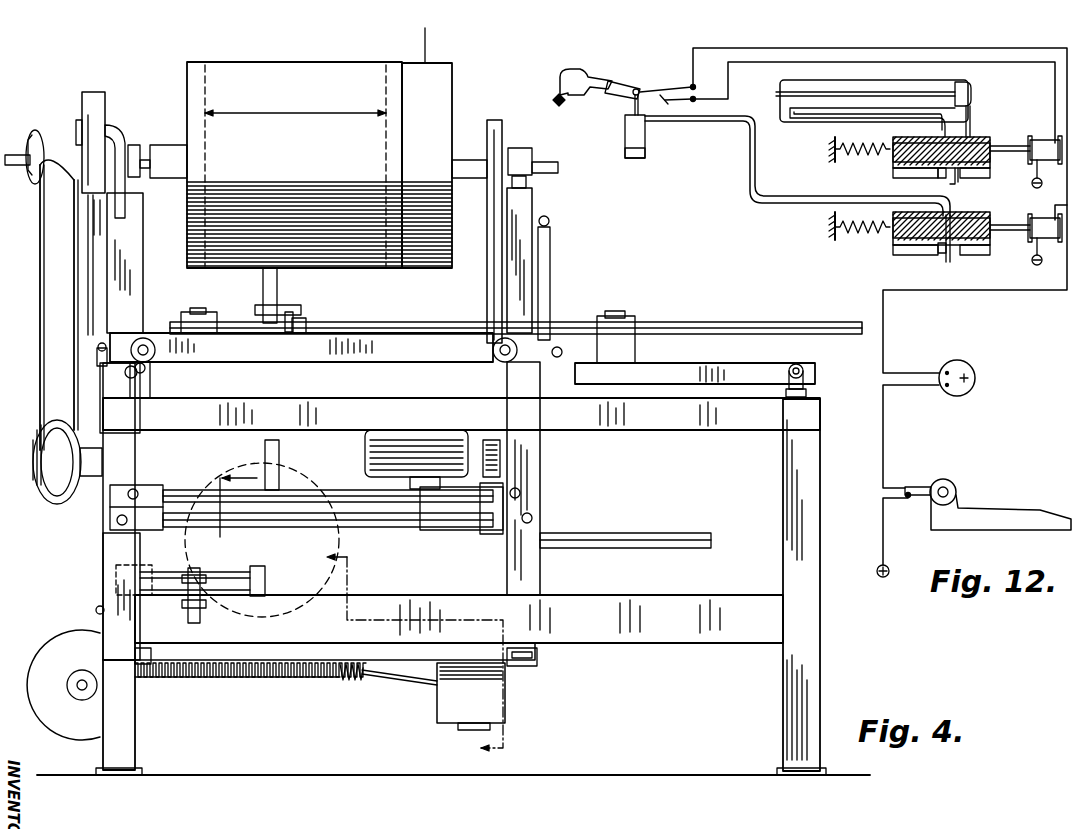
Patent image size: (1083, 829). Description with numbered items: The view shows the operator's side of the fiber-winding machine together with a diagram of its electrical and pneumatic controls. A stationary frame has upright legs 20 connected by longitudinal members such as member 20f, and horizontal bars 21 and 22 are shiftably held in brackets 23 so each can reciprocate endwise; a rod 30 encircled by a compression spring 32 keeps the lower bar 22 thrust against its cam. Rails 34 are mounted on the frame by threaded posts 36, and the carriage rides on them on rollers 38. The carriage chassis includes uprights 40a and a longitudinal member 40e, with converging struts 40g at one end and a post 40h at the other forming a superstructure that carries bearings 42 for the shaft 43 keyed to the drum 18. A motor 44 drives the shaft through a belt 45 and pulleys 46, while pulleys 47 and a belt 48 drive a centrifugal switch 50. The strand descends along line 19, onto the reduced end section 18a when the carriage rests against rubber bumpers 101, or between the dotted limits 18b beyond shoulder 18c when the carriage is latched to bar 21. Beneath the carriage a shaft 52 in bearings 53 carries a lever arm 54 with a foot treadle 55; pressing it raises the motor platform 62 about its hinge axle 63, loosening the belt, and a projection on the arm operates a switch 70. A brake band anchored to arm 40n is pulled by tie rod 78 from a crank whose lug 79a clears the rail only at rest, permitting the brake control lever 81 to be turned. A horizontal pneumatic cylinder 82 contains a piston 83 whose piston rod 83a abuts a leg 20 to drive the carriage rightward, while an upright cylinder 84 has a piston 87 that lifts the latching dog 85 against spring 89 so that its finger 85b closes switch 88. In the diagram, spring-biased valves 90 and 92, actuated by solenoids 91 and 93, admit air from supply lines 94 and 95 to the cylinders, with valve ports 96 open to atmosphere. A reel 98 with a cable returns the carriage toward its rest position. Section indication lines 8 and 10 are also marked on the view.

In FIG. 4, the drum 18 is at (265, 70).
In FIG. 4, the reduced end section of drum 18a is at (442, 72).
In FIG. 4, the dotted lines (winding limits) 18b is at (208, 160).
In FIG. 4, the shoulder 18c is at (414, 270).
In FIG. 4, the line 19 is at (424, 40).
In FIG. 4, the legs 20 is at (122, 752).
In FIG. 4, the horizontal frame member 20f is at (722, 643).
In FIG. 4, the upper horizontal bar 21 is at (686, 322).
In FIG. 12, the upper horizontal bar 21 is at (563, 109).
In FIG. 4, the lower horizontal bar 22 is at (682, 534).
In FIG. 4, the brackets or guides 23 is at (195, 314).
In FIG. 4, the rails 34 is at (245, 372).
In FIG. 4, the posts 36 is at (803, 366).
In FIG. 4, the rollers 38 is at (147, 338).
In FIG. 4, the carriage uprights 40a is at (112, 545).
In FIG. 4, the longitudinal carriage member 40e is at (395, 345).
In FIG. 4, the struts 40g is at (130, 292).
In FIG. 4, the post 40h is at (516, 213).
In FIG. 4, the rigid arm 40n is at (122, 205).
In FIG. 4, the bearings 42 is at (520, 148).
In FIG. 4, the shaft 43 is at (556, 172).
In FIG. 4, the motor 44 is at (280, 460).
In FIG. 4, the belt 45 is at (42, 344).
In FIG. 4, the pulleys 46 is at (32, 140).
In FIG. 4, the pulleys 47 is at (490, 126).
In FIG. 4, the belt 48 is at (488, 266).
In FIG. 12, the centrifugal switch 50 is at (976, 378).
In FIG. 4, the shaft 52 is at (356, 680).
In FIG. 4, the bearings 53 is at (143, 666).
In FIG. 12, the lever arm 54 is at (1028, 526).
In FIG. 4, the foot treadle 55 is at (490, 700).
In FIG. 4, the platform 62 is at (118, 578).
In FIG. 4, the horizontal axle 63 is at (232, 612).
In FIG. 12, the switch 70 is at (910, 498).
In FIG. 4, the tie rod 78 is at (90, 285).
In FIG. 4, the lug 79a is at (104, 346).
In FIG. 4, the brake control lever 81 is at (548, 262).
In FIG. 4, the pneumatic cylinder 82 is at (338, 492).
In FIG. 12, the pneumatic cylinder 82 is at (872, 84).
In FIG. 4, the piston 83 is at (468, 545).
In FIG. 12, the piston 83 is at (972, 93).
In FIG. 4, the piston rod 83a is at (150, 488).
In FIG. 12, the piston rod 83a is at (776, 94).
In FIG. 4, the pneumatic cylinder 84 is at (320, 385).
In FIG. 12, the pneumatic cylinder 84 is at (625, 135).
In FIG. 4, the latching dog 85 is at (270, 290).
In FIG. 12, the latching dog 85 is at (568, 70).
In FIG. 4, the finger 85b is at (296, 312).
In FIG. 12, the piston 87 is at (645, 153).
In FIG. 4, the switch 88 is at (306, 326).
In FIG. 12, the switch 88 is at (668, 88).
In FIG. 12, the coiled compression spring 89 is at (632, 104).
In FIG. 12, the spring-biased valve 90 is at (976, 135).
In FIG. 12, the solenoid 91 is at (1040, 145).
In FIG. 12, the spring-biased valve 92 is at (985, 252).
In FIG. 12, the solenoid 93 is at (1050, 238).
In FIG. 12, the supply line 94 is at (965, 174).
In FIG. 12, the supply line 95 is at (952, 262).
In FIG. 4, the valve ports 96 is at (80, 692).
In FIG. 12, the valve ports 96 is at (936, 172).
In FIG. 4, the spool or reel 98 is at (52, 655).
In FIG. 4, the rubber bumpers 101 is at (98, 610).
In FIG. 4, the rod 30 is at (404, 681).
In FIG. 4, the coiled compression spring 32 is at (312, 680).
In FIG. 4, the section line 10 is at (262, 536).
In FIG. 4, the section line 8 is at (403, 652).